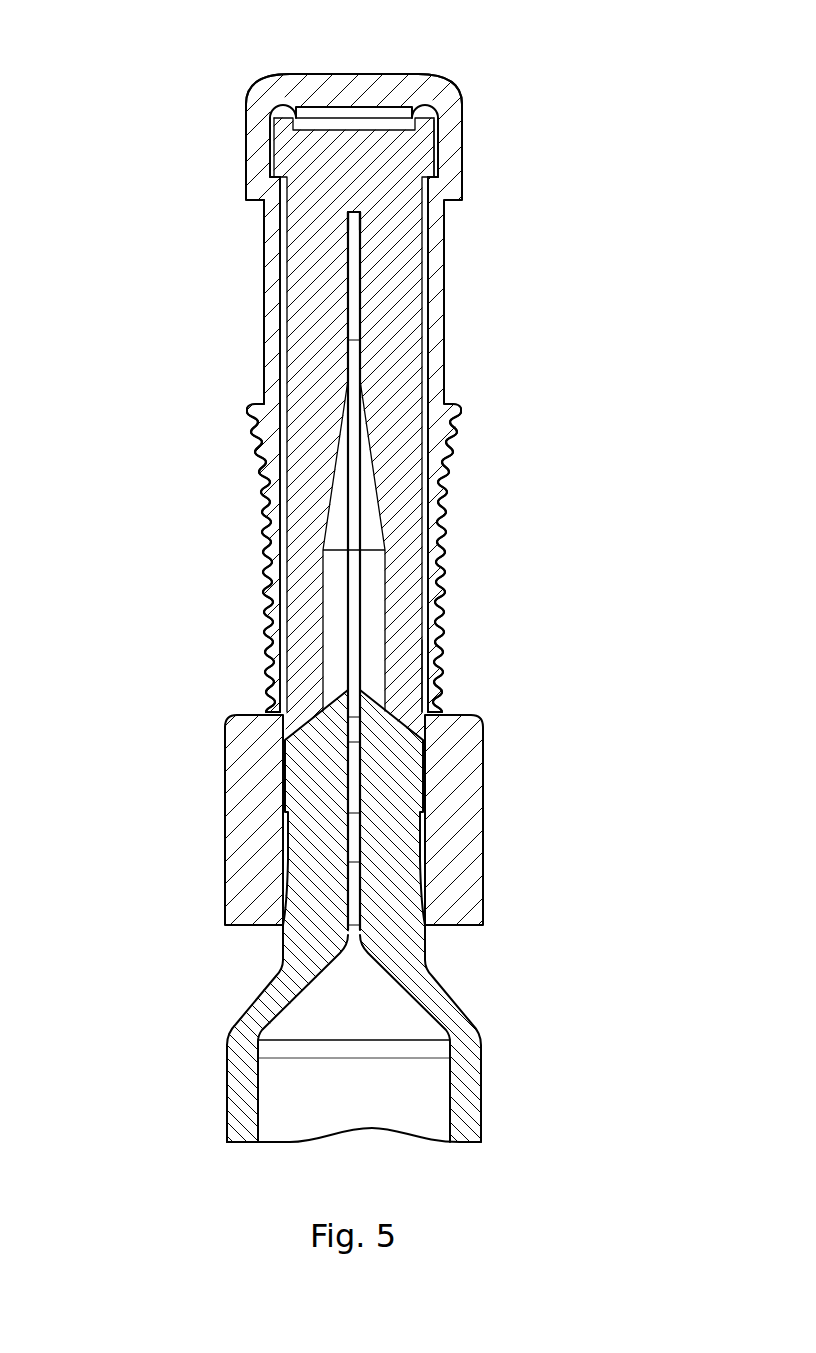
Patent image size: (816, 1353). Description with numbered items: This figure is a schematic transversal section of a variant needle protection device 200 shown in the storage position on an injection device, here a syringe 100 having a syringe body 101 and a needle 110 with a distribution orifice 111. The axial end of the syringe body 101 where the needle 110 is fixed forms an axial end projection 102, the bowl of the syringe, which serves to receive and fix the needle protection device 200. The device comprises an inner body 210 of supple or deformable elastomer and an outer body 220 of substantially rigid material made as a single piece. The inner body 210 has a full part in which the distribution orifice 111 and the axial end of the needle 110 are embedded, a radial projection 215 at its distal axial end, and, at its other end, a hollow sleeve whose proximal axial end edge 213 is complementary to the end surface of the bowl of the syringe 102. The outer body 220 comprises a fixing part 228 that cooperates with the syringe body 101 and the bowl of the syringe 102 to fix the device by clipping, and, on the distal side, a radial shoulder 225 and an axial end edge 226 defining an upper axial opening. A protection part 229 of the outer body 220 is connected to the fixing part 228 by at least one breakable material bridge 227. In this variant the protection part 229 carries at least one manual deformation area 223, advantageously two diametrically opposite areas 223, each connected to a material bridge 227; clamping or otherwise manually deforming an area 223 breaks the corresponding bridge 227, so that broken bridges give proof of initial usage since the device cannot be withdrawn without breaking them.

The syringe 100 is at (523, 1063).
The syringe body 101 is at (237, 1075).
The axial end projection 102 is at (442, 758).
The needle 110 is at (357, 465).
The distribution orifice 111 is at (357, 205).
The needle protection device 200 is at (477, 348).
The inner body 210 is at (322, 277).
The proximal axial end edge 213 is at (412, 687).
The radial projection 215 is at (283, 152).
The outer body 220 is at (446, 308).
The manual deformation area 223 is at (247, 509).
The radial shoulder 225 is at (443, 153).
The axial end edge 226 is at (283, 83).
The breakable material bridge 227 is at (277, 710).
The fixing part 228 is at (250, 800).
The protection part 229 is at (247, 359).